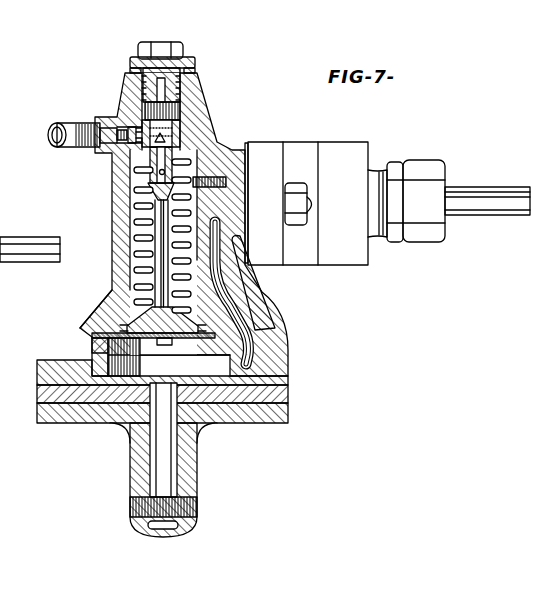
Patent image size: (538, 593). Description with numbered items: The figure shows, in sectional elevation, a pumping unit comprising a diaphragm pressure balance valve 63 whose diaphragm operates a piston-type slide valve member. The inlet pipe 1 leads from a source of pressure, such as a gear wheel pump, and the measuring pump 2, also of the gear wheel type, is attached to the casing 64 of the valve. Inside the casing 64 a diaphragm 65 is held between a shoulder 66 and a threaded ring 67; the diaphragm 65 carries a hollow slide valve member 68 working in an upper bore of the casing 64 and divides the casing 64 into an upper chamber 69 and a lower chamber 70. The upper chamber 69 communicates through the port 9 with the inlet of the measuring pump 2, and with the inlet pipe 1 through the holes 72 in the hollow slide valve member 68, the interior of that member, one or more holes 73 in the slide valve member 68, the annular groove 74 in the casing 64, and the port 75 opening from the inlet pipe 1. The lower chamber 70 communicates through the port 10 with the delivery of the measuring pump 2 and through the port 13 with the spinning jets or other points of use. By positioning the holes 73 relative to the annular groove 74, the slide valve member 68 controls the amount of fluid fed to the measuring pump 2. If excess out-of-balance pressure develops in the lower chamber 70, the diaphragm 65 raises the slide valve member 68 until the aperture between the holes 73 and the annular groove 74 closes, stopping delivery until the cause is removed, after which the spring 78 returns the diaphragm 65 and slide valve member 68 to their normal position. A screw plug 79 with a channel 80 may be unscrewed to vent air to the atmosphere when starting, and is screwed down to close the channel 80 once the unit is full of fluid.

The inlet pipe 1 is at (73, 127).
The measuring pump 2 is at (262, 152).
The port 9 is at (263, 148).
The port 10 is at (254, 333).
The port 13 is at (165, 468).
The diaphragm pressure balance valve 63 is at (205, 165).
The casing 64 is at (118, 221).
The diaphragm 65 is at (96, 318).
The shoulder 66 is at (90, 327).
The threaded ring 67 is at (92, 350).
The hollow slide valve member 68 is at (162, 106).
The upper chamber 69 is at (140, 275).
The lower chamber 70 is at (140, 362).
The holes 72 is at (148, 178).
The hole 73 is at (136, 150).
The annular groove 74 is at (160, 130).
The port 75 is at (140, 128).
The spring 78 is at (196, 293).
The screw plug 79 is at (141, 55).
The channel 80 is at (164, 82).